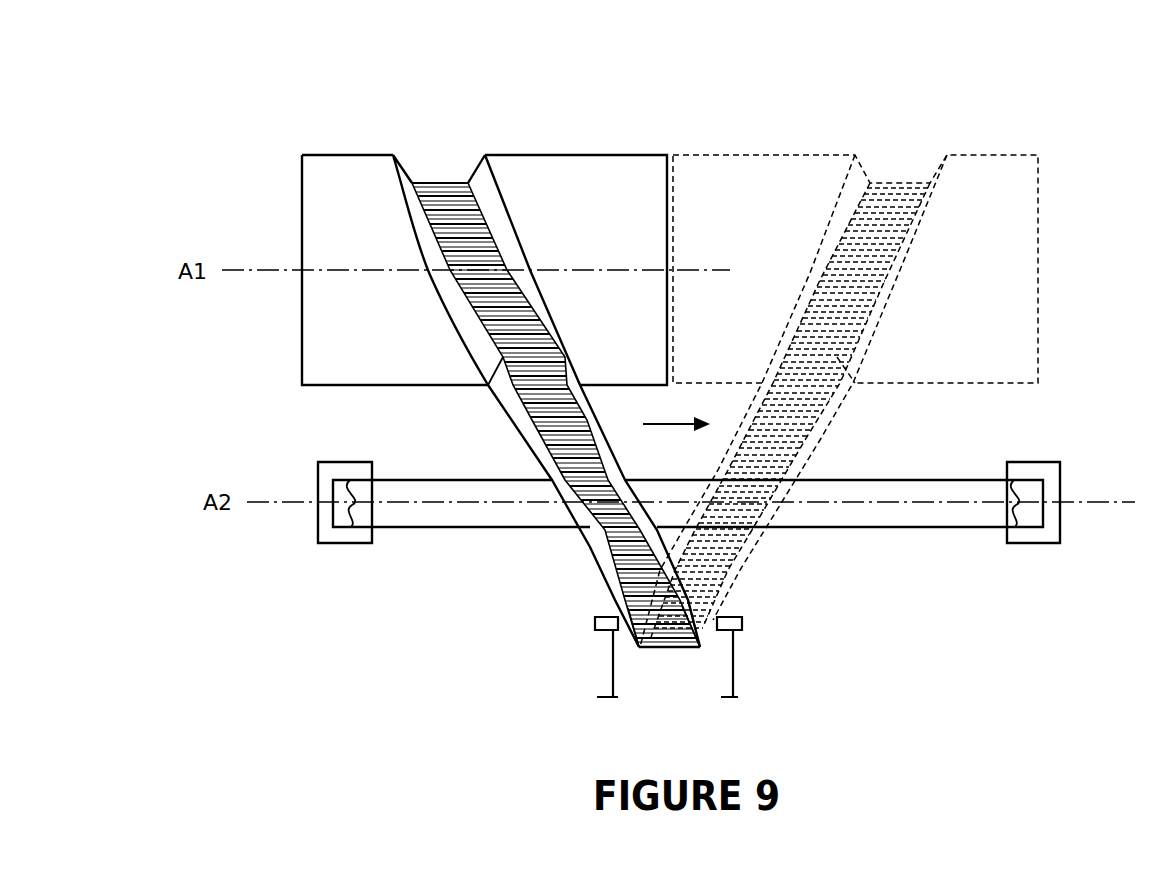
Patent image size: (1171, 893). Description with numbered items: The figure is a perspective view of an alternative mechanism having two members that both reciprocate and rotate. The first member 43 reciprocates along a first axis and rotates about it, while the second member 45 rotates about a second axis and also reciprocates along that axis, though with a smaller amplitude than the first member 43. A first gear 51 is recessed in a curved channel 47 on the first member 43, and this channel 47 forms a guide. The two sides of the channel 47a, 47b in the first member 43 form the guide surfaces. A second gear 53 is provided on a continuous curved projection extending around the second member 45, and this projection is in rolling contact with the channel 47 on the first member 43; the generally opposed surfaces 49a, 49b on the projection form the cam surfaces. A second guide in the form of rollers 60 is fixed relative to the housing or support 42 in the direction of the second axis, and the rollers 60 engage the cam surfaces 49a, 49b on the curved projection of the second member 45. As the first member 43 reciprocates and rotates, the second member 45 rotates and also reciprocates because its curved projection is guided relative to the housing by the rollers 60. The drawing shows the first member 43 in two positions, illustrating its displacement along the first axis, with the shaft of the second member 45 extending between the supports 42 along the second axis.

The housing or support 42 is at (323, 468).
The first member 43 is at (636, 173).
The second member 45 is at (447, 520).
The curved channel 47 is at (632, 388).
The side of the channel 47a is at (398, 176).
The side of the channel 47b is at (483, 180).
The cam surface 49a is at (630, 622).
The cam surface 49b is at (708, 627).
The first gear 51 is at (438, 187).
The second gear 53 is at (673, 650).
The rollers 60 is at (594, 622).